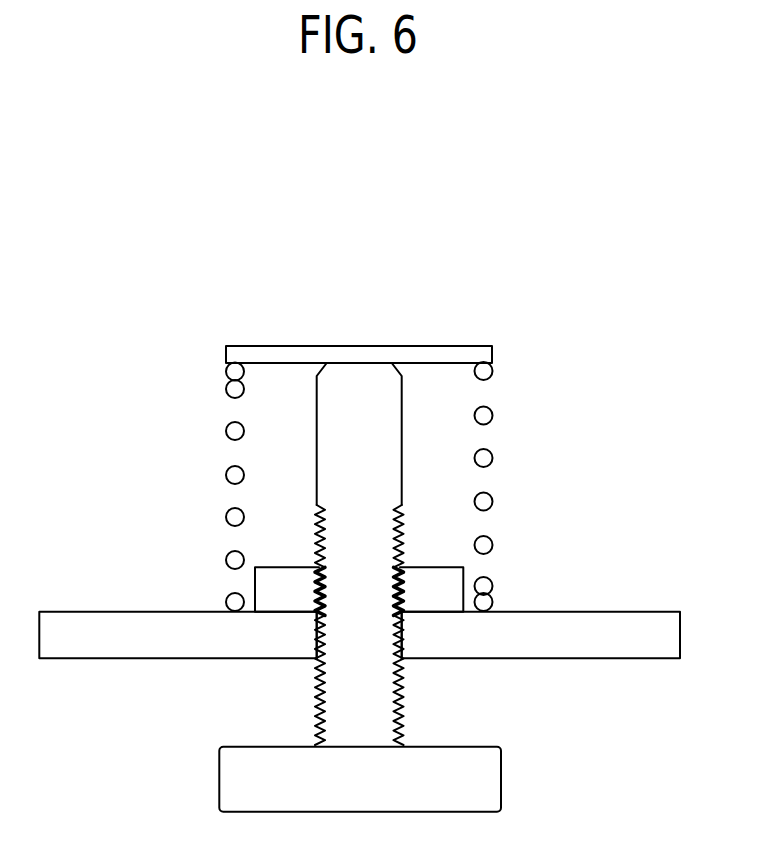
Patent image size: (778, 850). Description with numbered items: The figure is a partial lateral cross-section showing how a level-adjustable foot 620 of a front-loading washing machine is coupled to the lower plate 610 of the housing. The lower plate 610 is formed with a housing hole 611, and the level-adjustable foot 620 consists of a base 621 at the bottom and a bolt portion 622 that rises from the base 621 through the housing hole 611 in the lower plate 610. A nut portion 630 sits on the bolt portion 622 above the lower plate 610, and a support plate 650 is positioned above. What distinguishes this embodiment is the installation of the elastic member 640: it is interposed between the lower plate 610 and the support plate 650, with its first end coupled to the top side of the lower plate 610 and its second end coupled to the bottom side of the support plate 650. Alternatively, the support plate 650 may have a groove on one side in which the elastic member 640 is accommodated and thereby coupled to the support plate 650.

The lower plate 610 is at (660, 617).
The housing hole 611 is at (405, 627).
The level-adjustable foot 620 is at (279, 587).
The base 621 is at (222, 778).
The bolt portion 622 is at (333, 700).
The nut portion 630 is at (280, 571).
The elastic member 640 is at (220, 370).
The support plate 650 is at (353, 348).